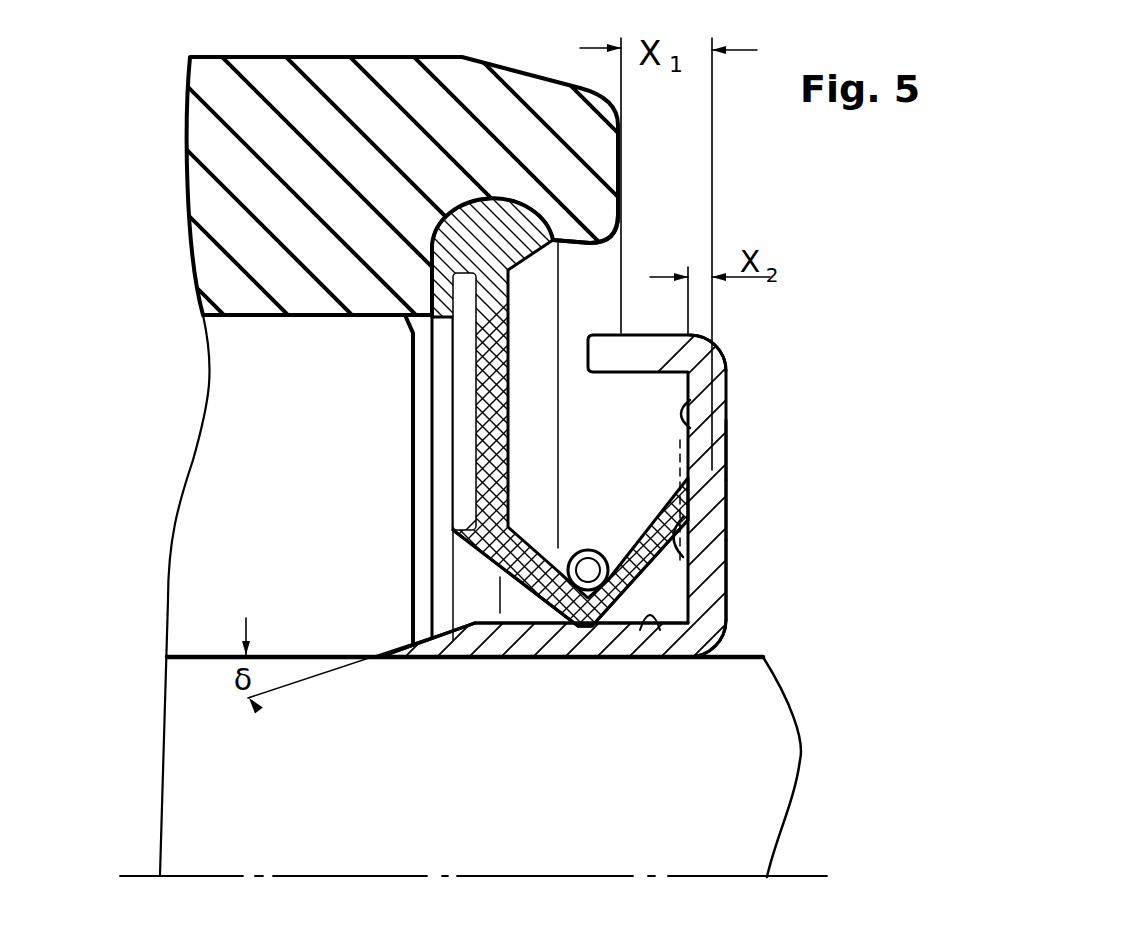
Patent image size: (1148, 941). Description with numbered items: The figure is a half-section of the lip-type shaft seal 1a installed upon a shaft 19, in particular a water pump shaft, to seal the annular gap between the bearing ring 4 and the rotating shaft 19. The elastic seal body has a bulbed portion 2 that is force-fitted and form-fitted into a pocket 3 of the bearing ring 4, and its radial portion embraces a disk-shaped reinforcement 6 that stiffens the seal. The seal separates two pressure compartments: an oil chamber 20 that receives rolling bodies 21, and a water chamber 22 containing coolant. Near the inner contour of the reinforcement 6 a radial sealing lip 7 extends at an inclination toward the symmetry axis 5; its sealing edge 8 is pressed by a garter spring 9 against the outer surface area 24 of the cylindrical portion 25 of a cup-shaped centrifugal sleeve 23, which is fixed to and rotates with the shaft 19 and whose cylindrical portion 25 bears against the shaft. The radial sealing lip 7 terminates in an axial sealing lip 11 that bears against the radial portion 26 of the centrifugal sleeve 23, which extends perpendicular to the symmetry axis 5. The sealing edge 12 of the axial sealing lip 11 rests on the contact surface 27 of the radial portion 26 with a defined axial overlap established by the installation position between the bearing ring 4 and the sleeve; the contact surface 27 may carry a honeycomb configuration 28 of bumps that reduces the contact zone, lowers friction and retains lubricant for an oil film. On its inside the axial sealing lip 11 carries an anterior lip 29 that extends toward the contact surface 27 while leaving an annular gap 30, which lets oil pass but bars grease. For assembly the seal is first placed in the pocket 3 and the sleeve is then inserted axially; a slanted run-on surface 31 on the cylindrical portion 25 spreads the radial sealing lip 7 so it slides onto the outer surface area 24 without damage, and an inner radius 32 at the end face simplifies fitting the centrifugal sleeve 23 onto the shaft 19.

The lip-type shaft seal 1a is at (397, 407).
The bulbed portion 2 is at (545, 262).
The pocket 3 is at (597, 193).
The bearing ring 4 is at (587, 147).
The symmetry axis 5 is at (810, 877).
The disk-shaped reinforcement 6 is at (455, 437).
The radial sealing lip 7 is at (505, 578).
The sealing edge 8 is at (585, 625).
The garter spring 9 is at (577, 553).
The axial sealing lip 11 is at (722, 612).
The sealing edge 12 is at (722, 473).
The shaft 19 is at (388, 795).
The oil chamber 20 is at (255, 425).
The rolling bodies 21 is at (218, 531).
The water chamber 22 is at (658, 434).
The centrifugal sleeve 23 is at (740, 548).
The outer surface area 24 is at (667, 627).
The cylindrical portion 25 is at (528, 640).
The radial portion 26 is at (728, 435).
The contact surface 27 is at (733, 387).
The honeycomb configuration 28 is at (718, 507).
The anterior lip 29 is at (655, 567).
The annular gap 30 is at (692, 558).
The slanted run-on surface 31 is at (464, 636).
The inner radius 32 is at (418, 640).